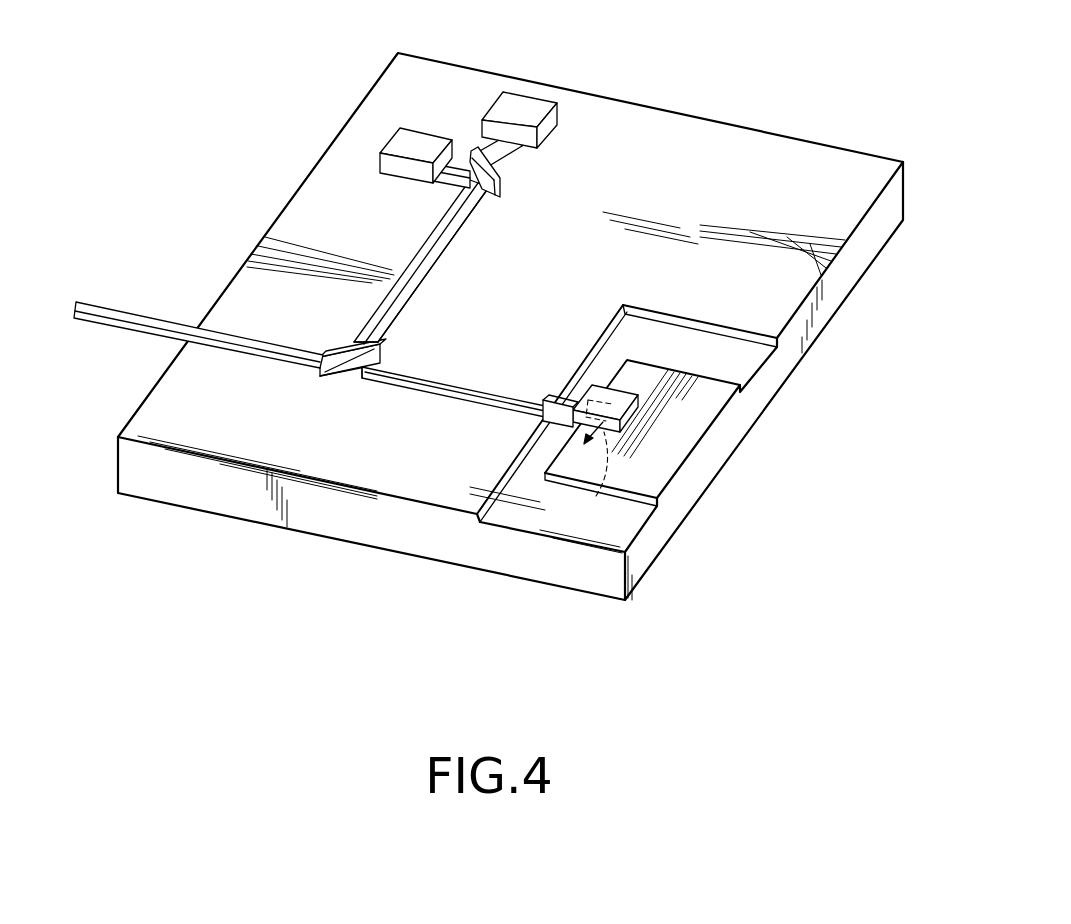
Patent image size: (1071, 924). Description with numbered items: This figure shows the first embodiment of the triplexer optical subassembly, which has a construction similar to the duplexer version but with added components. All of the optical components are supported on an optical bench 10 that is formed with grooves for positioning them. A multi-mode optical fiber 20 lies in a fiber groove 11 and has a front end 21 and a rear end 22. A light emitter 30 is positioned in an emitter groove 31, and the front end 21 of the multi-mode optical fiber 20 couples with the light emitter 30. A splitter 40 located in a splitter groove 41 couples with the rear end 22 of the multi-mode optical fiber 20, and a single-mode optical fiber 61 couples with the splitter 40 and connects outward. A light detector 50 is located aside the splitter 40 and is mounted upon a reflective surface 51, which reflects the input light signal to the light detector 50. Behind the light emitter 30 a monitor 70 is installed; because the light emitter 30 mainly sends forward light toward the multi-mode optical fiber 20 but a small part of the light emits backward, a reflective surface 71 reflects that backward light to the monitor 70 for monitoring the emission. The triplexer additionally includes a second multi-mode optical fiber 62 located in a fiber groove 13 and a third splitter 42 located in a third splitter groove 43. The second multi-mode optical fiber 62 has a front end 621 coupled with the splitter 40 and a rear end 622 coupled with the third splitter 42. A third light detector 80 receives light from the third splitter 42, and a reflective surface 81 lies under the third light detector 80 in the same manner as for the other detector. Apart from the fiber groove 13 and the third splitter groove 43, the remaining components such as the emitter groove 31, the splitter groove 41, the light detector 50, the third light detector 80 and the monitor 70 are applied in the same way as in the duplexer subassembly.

The optical bench 10 is at (680, 490).
The fiber groove 11 is at (453, 395).
The fiber groove 13 is at (422, 257).
The multi-mode optical fiber 20 is at (467, 392).
The front end 21 is at (540, 412).
The rear end 22 is at (360, 382).
The light emitter 30 is at (567, 404).
The emitter groove 31 is at (502, 508).
The splitter 40 is at (352, 352).
The splitter groove 41 is at (318, 378).
The third splitter 42 is at (503, 176).
The third splitter groove 43 is at (502, 192).
The light detector 50 is at (523, 107).
The reflective surface 51 is at (505, 128).
The single-mode optical fiber 61 is at (243, 343).
The second multi-mode optical fiber 62 is at (412, 268).
The front end 621 is at (394, 326).
The rear end 622 is at (488, 205).
The monitor 70 is at (622, 398).
The reflective surface 71 is at (595, 474).
The third light detector 80 is at (403, 148).
The reflective surface 81 is at (425, 185).